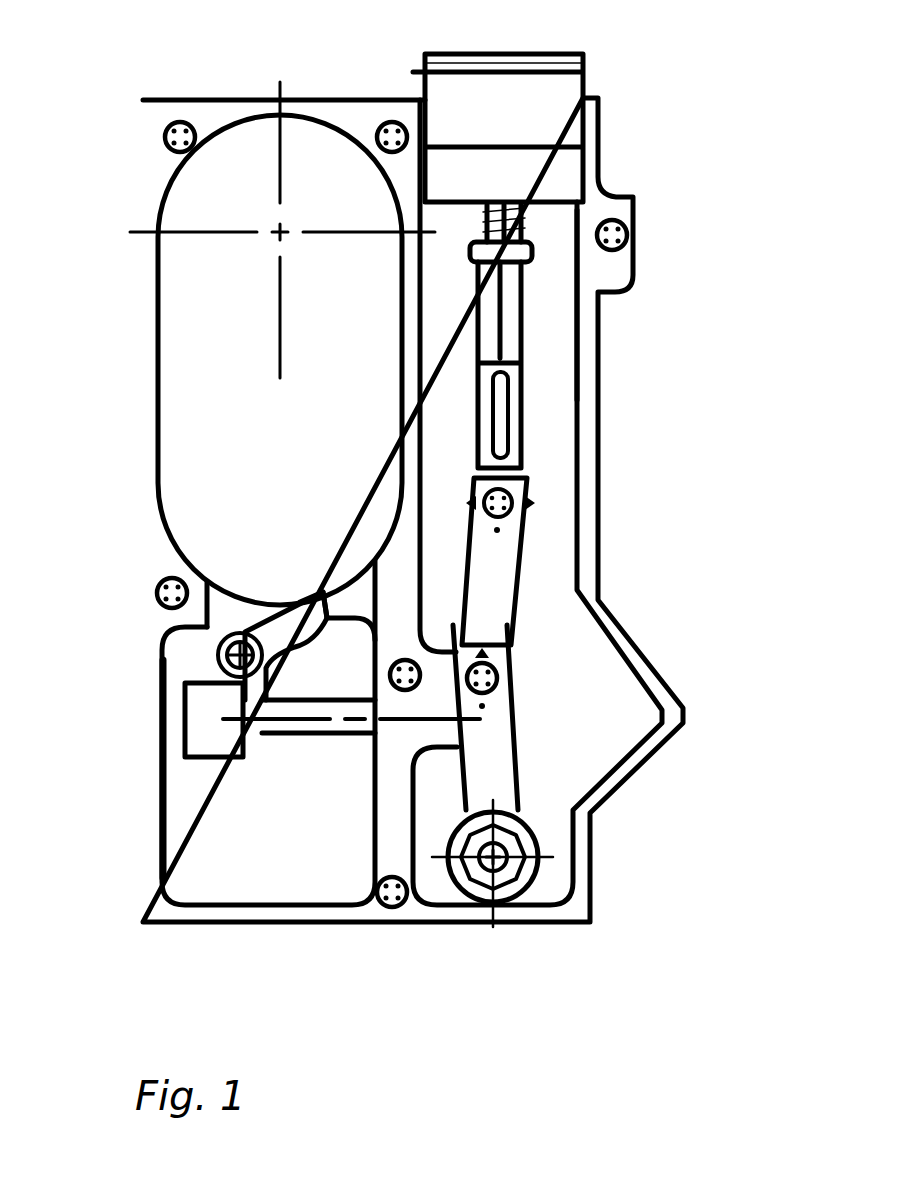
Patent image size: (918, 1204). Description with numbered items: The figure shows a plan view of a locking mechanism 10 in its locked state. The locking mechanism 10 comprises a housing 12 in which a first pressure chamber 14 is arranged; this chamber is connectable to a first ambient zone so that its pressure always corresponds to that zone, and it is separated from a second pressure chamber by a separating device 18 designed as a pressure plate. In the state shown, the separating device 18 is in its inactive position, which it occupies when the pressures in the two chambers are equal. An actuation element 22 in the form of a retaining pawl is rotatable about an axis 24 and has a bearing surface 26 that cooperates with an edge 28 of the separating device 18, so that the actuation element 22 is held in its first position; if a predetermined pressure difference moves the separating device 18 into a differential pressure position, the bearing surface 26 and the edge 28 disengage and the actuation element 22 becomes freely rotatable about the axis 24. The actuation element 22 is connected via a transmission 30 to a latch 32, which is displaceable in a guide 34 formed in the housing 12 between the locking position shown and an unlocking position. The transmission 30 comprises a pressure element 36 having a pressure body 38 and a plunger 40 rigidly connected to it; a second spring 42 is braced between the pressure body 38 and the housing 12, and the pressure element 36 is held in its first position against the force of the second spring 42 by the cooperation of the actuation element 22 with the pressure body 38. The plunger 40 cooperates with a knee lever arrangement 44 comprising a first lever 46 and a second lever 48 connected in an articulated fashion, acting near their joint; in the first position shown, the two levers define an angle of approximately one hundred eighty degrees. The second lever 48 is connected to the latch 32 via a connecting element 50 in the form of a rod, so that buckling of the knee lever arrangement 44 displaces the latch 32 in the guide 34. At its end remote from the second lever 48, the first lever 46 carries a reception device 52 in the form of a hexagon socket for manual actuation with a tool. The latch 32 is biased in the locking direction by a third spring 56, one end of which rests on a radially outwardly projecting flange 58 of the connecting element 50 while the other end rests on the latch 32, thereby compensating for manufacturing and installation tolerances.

The locking mechanism 10 is at (728, 104).
The housing 12 is at (195, 115).
The first pressure chamber 14 is at (312, 467).
The separating device 18 is at (305, 150).
The actuation element 22 is at (283, 647).
The axis 24 is at (217, 657).
The bearing surface 26 is at (322, 590).
The edge 28 is at (334, 593).
The transmission 30 is at (544, 736).
The latch 32 is at (518, 97).
The guide 34 is at (573, 223).
The pressure element 36 is at (238, 772).
The pressure body 38 is at (205, 750).
The plunger 40 is at (292, 735).
The second spring 42 is at (160, 745).
The knee lever arrangement 44 is at (528, 690).
The first lever 46 is at (505, 767).
The second lever 48 is at (500, 563).
The connecting element 50 is at (522, 385).
The reception device 52 is at (497, 922).
The third spring 56 is at (486, 218).
The flange 58 is at (474, 256).